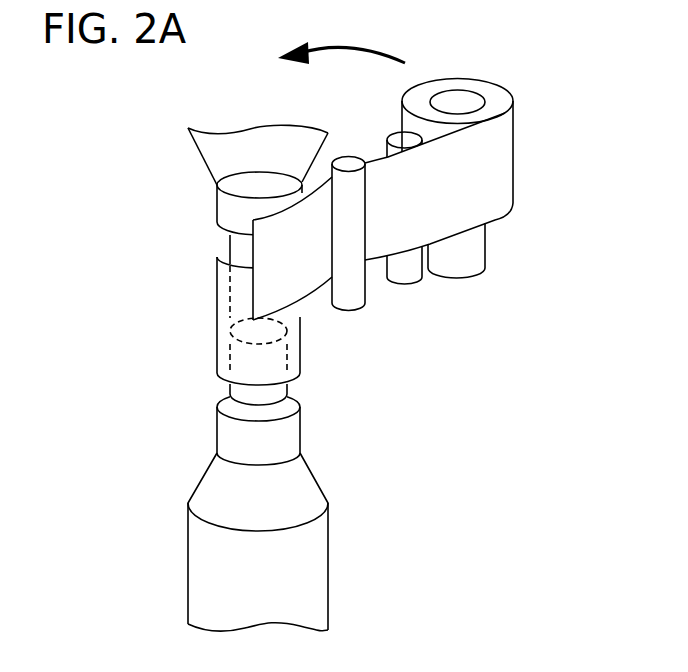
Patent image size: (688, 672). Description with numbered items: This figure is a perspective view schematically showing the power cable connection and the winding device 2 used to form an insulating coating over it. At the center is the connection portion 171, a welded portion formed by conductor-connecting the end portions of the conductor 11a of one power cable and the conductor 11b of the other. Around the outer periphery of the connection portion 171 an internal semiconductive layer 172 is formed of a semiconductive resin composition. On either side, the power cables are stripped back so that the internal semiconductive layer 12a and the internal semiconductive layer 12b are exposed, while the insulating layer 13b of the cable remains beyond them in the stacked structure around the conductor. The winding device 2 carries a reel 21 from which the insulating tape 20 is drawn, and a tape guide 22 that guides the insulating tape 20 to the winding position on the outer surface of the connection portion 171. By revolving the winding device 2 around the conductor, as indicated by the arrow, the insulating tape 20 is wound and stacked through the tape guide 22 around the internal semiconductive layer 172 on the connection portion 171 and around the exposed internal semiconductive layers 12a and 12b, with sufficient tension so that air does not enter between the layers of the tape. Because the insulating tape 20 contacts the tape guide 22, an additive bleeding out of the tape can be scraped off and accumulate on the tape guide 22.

The insulating layer 13b is at (215, 160).
The internal semiconductive layer 12a is at (225, 207).
The conductor 11a is at (228, 255).
The connection portion 171 is at (233, 337).
The internal semiconductive layer 172 is at (230, 363).
The conductor 11b is at (235, 397).
The internal semiconductive layer 12b is at (228, 435).
The insulating tape 20 is at (505, 167).
The reel 21 is at (465, 270).
The tape guide 22 is at (377, 256).
The winding device 2 is at (418, 247).